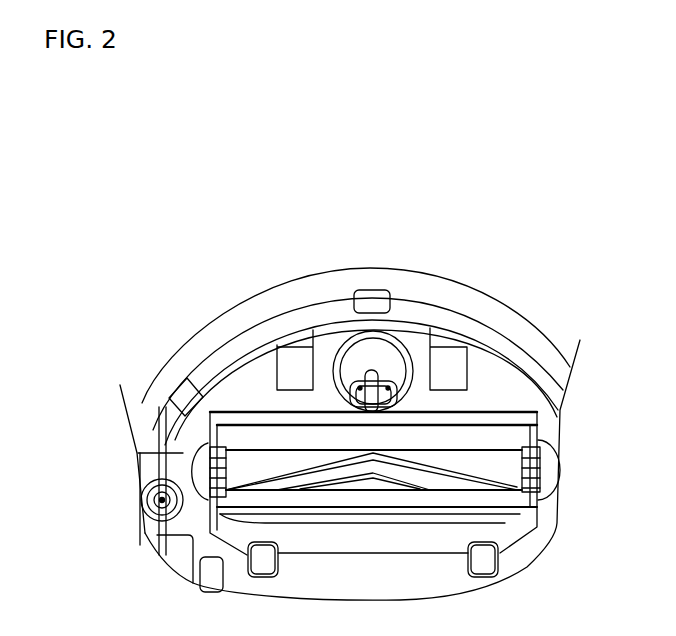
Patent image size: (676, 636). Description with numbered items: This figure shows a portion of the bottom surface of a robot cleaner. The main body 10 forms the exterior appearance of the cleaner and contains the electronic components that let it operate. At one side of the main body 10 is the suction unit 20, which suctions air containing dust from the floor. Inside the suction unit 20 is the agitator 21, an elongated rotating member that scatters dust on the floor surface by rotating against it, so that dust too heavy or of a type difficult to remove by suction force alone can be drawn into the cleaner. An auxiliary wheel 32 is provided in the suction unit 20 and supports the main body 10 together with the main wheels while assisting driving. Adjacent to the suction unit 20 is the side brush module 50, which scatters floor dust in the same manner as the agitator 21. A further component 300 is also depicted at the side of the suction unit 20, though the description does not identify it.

The main body 10 is at (512, 352).
The suction unit 20 is at (535, 470).
The agitator 21 is at (548, 506).
The auxiliary wheel 32 is at (388, 352).
The side brush module 50 is at (158, 500).
The sensor module 300 is at (203, 515).